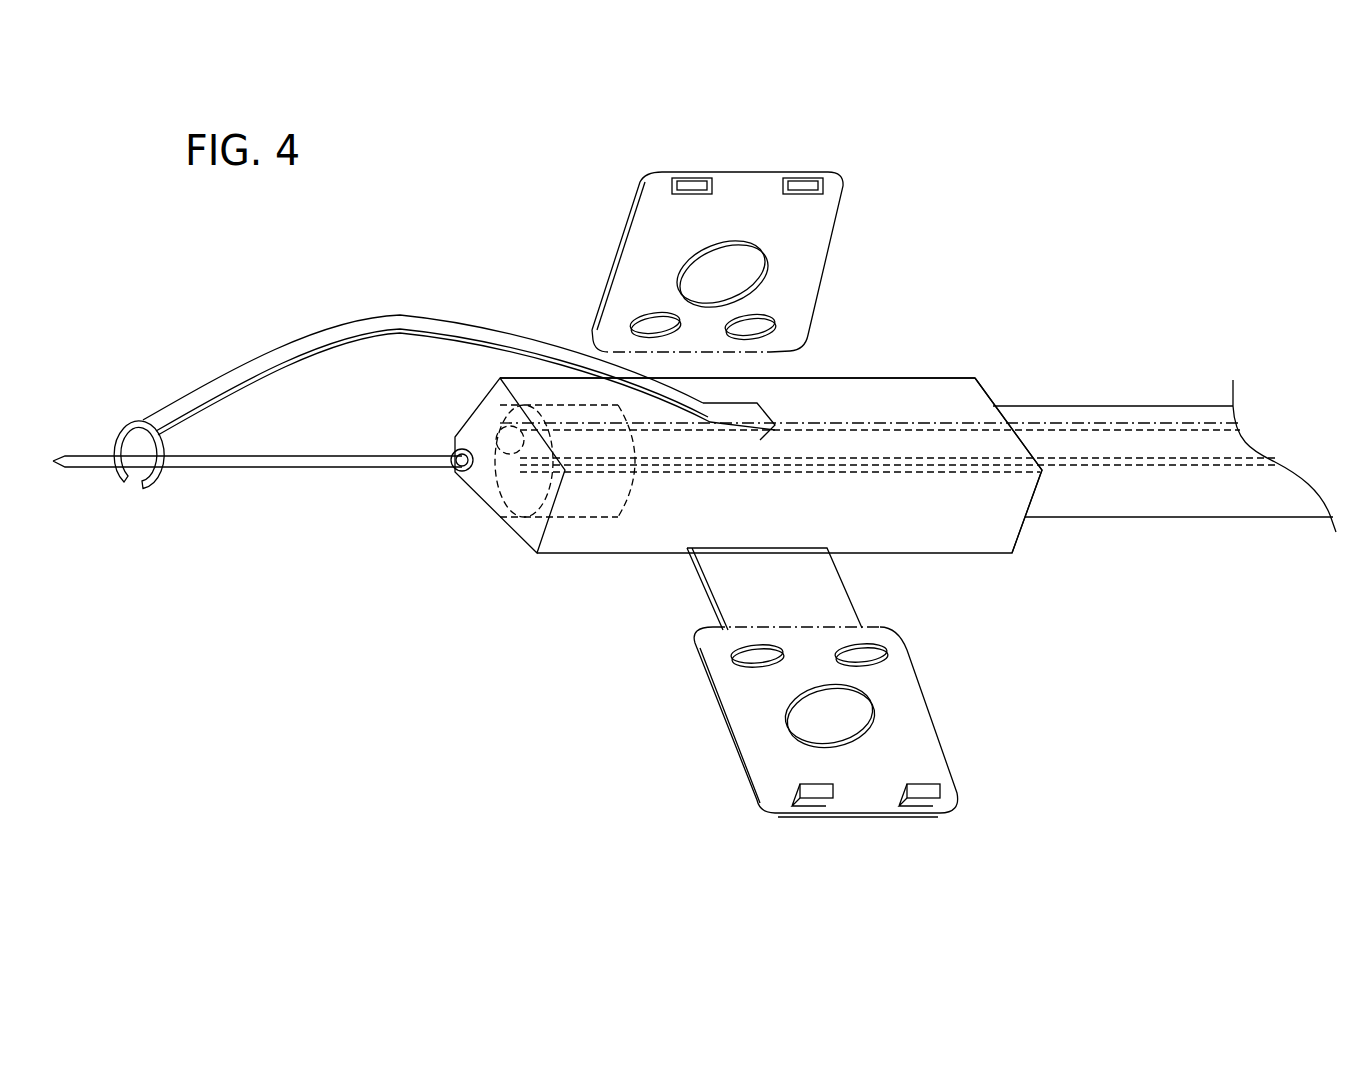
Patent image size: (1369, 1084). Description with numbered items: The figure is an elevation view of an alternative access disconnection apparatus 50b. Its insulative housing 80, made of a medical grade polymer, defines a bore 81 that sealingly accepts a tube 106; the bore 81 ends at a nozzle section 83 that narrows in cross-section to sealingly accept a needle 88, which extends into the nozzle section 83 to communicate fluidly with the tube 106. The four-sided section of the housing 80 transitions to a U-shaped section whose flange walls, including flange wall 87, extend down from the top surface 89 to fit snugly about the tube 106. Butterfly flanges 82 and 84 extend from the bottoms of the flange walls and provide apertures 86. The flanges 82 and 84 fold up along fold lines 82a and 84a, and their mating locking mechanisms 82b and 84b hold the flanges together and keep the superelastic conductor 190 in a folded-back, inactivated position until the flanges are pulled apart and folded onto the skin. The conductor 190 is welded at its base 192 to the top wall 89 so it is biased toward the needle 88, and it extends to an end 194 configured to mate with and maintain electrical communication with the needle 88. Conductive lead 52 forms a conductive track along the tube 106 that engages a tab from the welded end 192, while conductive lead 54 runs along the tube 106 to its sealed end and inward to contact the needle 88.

The access disconnection apparatus 50b is at (962, 238).
The conductive lead 52 is at (1138, 467).
The conductive lead 54 is at (472, 417).
The insulative housing 80 is at (975, 380).
The bore 81 is at (607, 490).
The butterfly flange 82 is at (788, 242).
The fold line 82a is at (640, 347).
The mating locking mechanism 82b is at (695, 188).
The nozzle section 83 is at (487, 510).
The butterfly flange 84 is at (766, 766).
The fold line 84a is at (803, 628).
The mating locking mechanism 84b is at (815, 800).
The aperture 86 is at (700, 262).
The flange wall 87 is at (990, 537).
The needle 88 is at (275, 468).
The top surface 89 is at (901, 390).
The tube 106 is at (572, 493).
The superelastic conductor 190 is at (390, 312).
The base 192 is at (742, 403).
The end 194 is at (120, 433).